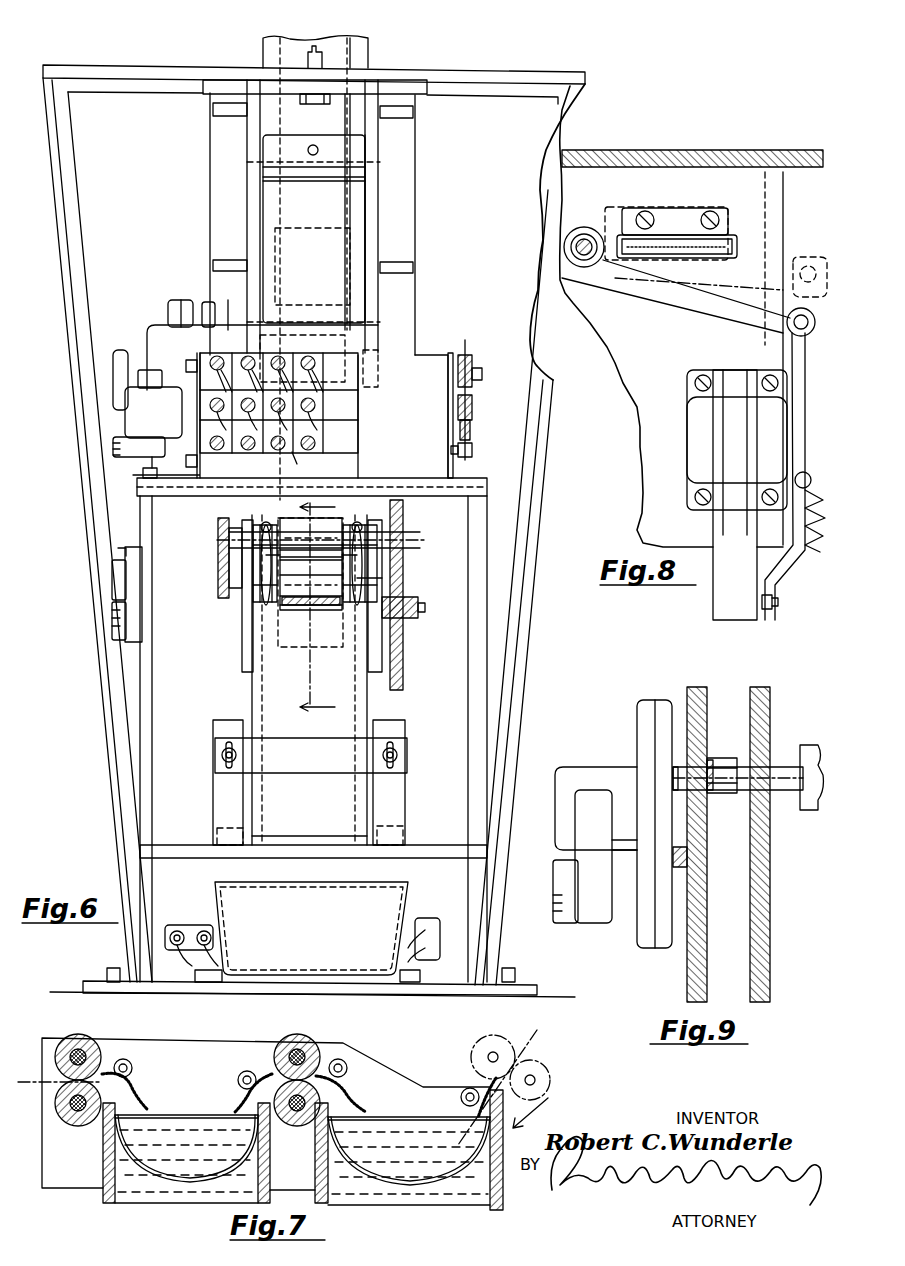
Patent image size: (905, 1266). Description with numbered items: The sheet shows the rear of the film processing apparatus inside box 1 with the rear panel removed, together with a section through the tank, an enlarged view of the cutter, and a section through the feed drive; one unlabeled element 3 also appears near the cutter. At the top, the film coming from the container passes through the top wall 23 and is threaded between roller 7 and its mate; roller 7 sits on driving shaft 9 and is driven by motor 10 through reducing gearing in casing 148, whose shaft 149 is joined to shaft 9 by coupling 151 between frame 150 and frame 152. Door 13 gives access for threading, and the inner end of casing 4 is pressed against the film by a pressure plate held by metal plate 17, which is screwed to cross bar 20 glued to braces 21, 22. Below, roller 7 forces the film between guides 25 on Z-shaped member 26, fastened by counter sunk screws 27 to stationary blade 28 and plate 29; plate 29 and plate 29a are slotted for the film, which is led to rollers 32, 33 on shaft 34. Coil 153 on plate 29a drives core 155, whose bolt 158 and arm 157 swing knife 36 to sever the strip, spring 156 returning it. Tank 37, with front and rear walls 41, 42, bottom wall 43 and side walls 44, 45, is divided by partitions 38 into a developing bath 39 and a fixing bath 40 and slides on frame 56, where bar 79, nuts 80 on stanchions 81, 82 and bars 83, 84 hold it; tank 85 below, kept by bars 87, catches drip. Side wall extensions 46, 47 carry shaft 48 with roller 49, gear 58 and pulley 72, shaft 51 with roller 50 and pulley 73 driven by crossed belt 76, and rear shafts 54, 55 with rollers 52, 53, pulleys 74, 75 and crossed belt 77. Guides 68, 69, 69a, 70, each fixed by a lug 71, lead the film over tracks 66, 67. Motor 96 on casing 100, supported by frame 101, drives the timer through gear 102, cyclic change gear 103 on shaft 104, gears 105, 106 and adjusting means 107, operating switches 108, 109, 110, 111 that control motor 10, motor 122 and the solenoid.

In FIG. 6, the box 1 is at (588, 102).
In FIG. 8, the slot 3 is at (702, 252).
In FIG. 6, the casing 4 is at (295, 230).
In FIG. 6, the roller 7 is at (320, 614).
In FIG. 9, the roller 7 is at (810, 810).
In FIG. 9, the driving shaft 9 is at (786, 772).
In FIG. 6, the motor 10 is at (170, 312).
In FIG. 9, the motor 10 is at (580, 770).
In FIG. 6, the door 13 is at (213, 243).
In FIG. 6, the metal plate 17 is at (355, 218).
In FIG. 6, the cross bar 20 is at (400, 112).
In FIG. 6, the brace 21 is at (372, 205).
In FIG. 6, the brace 22 is at (247, 176).
In FIG. 6, the top wall 23 is at (462, 67).
In FIG. 8, the guides 25 is at (740, 247).
In FIG. 8, the Z-shaped member 26 is at (688, 207).
In FIG. 8, the counter sunk screws 27 is at (647, 210).
In FIG. 8, the stationary blade 28 is at (610, 222).
In FIG. 8, the plate 29 is at (605, 165).
In FIG. 8, the plate 29a is at (641, 440).
In FIG. 7, the roller 32 is at (482, 1048).
In FIG. 7, the roller 33 is at (553, 1060).
In FIG. 7, the shaft 34 is at (498, 1052).
In FIG. 8, the knife 36 is at (690, 302).
In FIG. 7, the tank 37 is at (546, 1107).
In FIG. 7, the partitions 38 is at (232, 1198).
In FIG. 7, the developing bath 39 is at (388, 1118).
In FIG. 7, the fixing bath 40 is at (192, 1115).
In FIG. 7, the front wall 41 is at (105, 1185).
In FIG. 7, the rear wall 42 is at (505, 1200).
In FIG. 6, the bottom wall 43 is at (315, 836).
In FIG. 6, the side wall 44 is at (250, 700).
In FIG. 6, the side wall 45 is at (372, 712).
In FIG. 6, the side wall extension 46 is at (240, 668).
In FIG. 6, the side wall extension 47 is at (375, 675).
In FIG. 7, the shaft 48 is at (282, 1036).
In FIG. 7, the roller 49 is at (306, 1040).
In FIG. 7, the roller 50 is at (302, 1126).
In FIG. 7, the shaft 51 is at (298, 1166).
In FIG. 6, the roller 52 is at (321, 582).
In FIG. 7, the roller 52 is at (82, 1035).
In FIG. 6, the roller 53 is at (317, 603).
In FIG. 7, the roller 53 is at (85, 1126).
In FIG. 7, the shaft 54 is at (66, 1040).
In FIG. 7, the shaft 55 is at (60, 1106).
In FIG. 6, the frame 56 is at (333, 852).
In FIG. 6, the gear 58 is at (213, 110).
In FIG. 7, the track 66 is at (420, 1186).
In FIG. 7, the track 67 is at (165, 1182).
In FIG. 7, the guide 68 is at (470, 1088).
In FIG. 7, the guide 69 is at (346, 1096).
In FIG. 7, the guide 69a is at (250, 1072).
In FIG. 7, the guide 70 is at (138, 1092).
In FIG. 7, the lug 71 is at (132, 1066).
In FIG. 6, the pulley 72 is at (263, 523).
In FIG. 6, the pulley 73 is at (283, 560).
In FIG. 6, the pulley 74 is at (350, 530).
In FIG. 6, the pulley 75 is at (375, 578).
In FIG. 6, the belt 76 is at (255, 565).
In FIG. 6, the crossed belt 77 is at (372, 562).
In FIG. 6, the bar 79 is at (288, 765).
In FIG. 6, the nuts 80 is at (220, 755).
In FIG. 6, the stanchion 81 is at (215, 798).
In FIG. 6, the stanchion 82 is at (395, 797).
In FIG. 6, the bar 83 is at (217, 829).
In FIG. 6, the bar 84 is at (403, 826).
In FIG. 6, the tank 85 is at (214, 905).
In FIG. 6, the bars 87 is at (195, 977).
In FIG. 6, the motor 96 is at (128, 368).
In FIG. 6, the casing 100 is at (197, 372).
In FIG. 6, the frame 101 is at (472, 542).
In FIG. 6, the gear 102 is at (474, 400).
In FIG. 6, the cyclic change gear 103 is at (474, 360).
In FIG. 6, the shaft 104 is at (482, 374).
In FIG. 6, the gear 105 is at (462, 350).
In FIG. 6, the gear 106 is at (472, 431).
In FIG. 6, the adjusting means 107 is at (474, 451).
In FIG. 6, the precision switch 108 is at (228, 330).
In FIG. 6, the precision switch 109 is at (262, 450).
In FIG. 6, the precision switch 110 is at (285, 452).
In FIG. 6, the precision switch 111 is at (318, 436).
In FIG. 6, the motor 122 is at (137, 602).
In FIG. 9, the casing 148 is at (640, 714).
In FIG. 9, the shaft 149 is at (672, 778).
In FIG. 9, the frame 150 is at (686, 962).
In FIG. 9, the coupling 151 is at (720, 796).
In FIG. 9, the frame 152 is at (770, 894).
In FIG. 8, the coil 153 is at (690, 392).
In FIG. 8, the core 155 is at (725, 582).
In FIG. 8, the spring 156 is at (815, 560).
In FIG. 8, the arm 157 is at (790, 355).
In FIG. 8, the bolt 158 is at (770, 609).